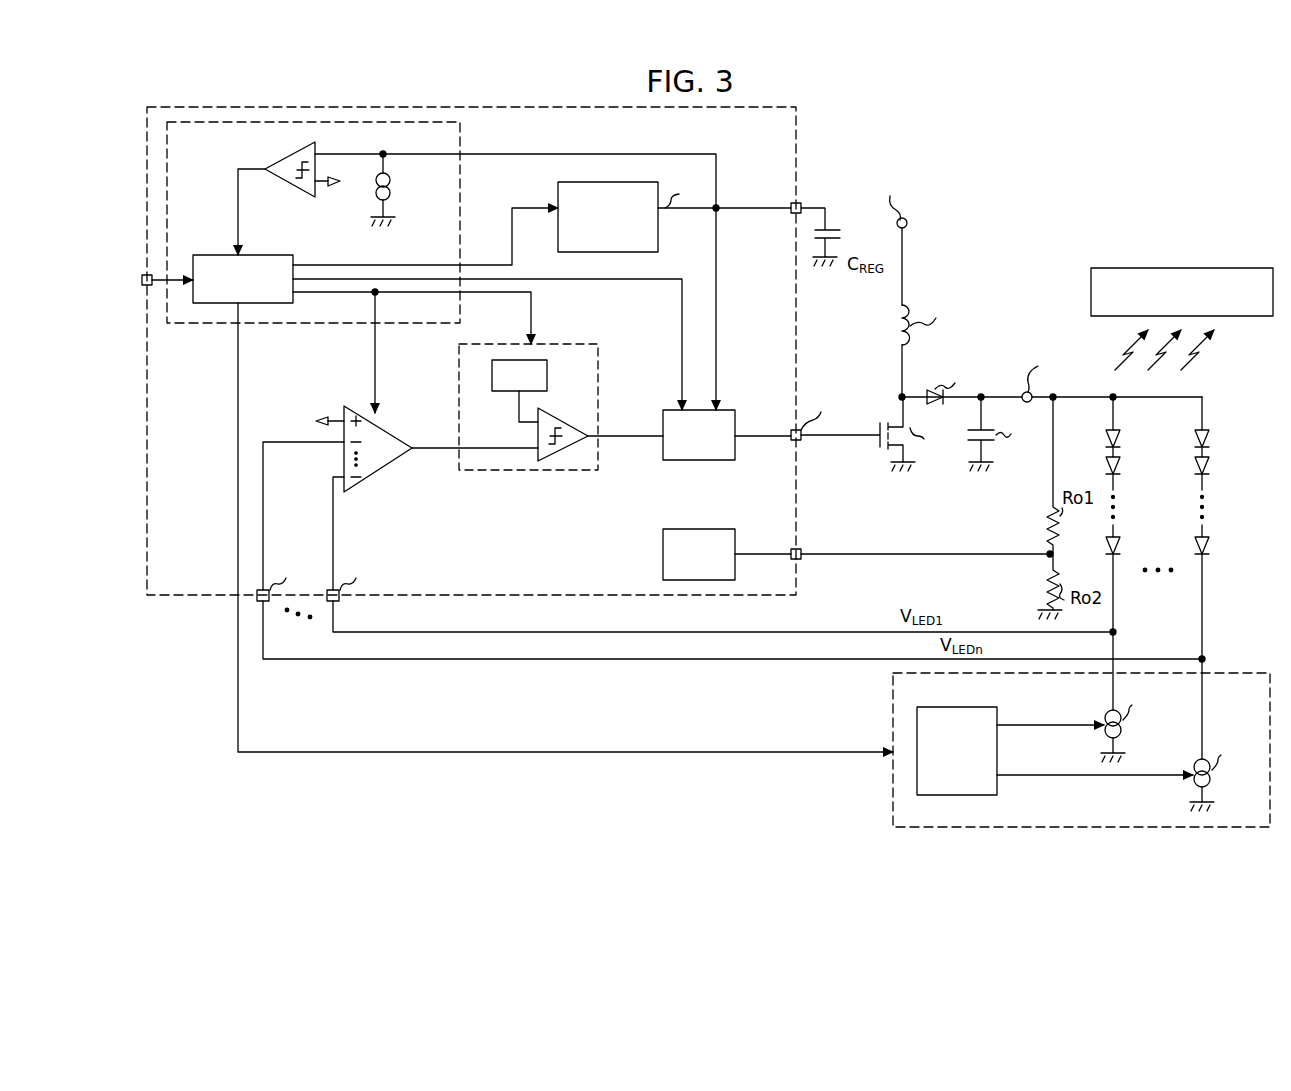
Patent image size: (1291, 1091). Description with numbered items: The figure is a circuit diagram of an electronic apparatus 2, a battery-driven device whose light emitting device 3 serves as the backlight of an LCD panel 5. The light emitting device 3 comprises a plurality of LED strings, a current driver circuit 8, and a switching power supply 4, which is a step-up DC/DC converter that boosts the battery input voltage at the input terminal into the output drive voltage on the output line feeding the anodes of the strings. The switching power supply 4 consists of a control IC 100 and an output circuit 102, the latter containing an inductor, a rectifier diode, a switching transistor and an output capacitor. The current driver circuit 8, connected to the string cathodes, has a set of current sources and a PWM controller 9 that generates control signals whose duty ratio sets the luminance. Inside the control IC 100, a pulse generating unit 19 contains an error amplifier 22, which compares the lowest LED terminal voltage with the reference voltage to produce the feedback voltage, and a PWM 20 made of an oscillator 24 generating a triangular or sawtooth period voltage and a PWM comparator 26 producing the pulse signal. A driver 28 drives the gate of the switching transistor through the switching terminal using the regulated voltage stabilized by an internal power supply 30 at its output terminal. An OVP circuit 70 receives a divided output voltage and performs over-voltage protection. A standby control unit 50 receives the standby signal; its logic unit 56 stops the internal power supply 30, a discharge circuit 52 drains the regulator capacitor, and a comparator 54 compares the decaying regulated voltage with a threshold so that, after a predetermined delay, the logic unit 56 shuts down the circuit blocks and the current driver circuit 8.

The electronic apparatus 2 is at (1177, 153).
The light emitting device 3 is at (1014, 334).
The switching power supply 4 is at (820, 509).
The liquid crystal display (LCD) panel 5 is at (1205, 268).
The current driver circuit 8 is at (1081, 773).
The PWM controller 9 is at (940, 707).
The pulse generating unit 19 is at (382, 514).
The PWM 20 is at (561, 432).
The error amplifier 22 is at (396, 468).
The oscillator 24 is at (547, 366).
The PWM comparator 26 is at (565, 415).
The driver 28 is at (702, 460).
The internal power supply 30 is at (582, 182).
The standby control unit 50 is at (297, 323).
The discharge circuit 52 is at (392, 187).
The comparator 54 is at (294, 149).
The logic unit 56 is at (262, 255).
The over-voltage protection (OVP) circuit 70 is at (663, 554).
The control integrated circuit (IC) 100 is at (796, 478).
The output circuit 102 is at (873, 472).